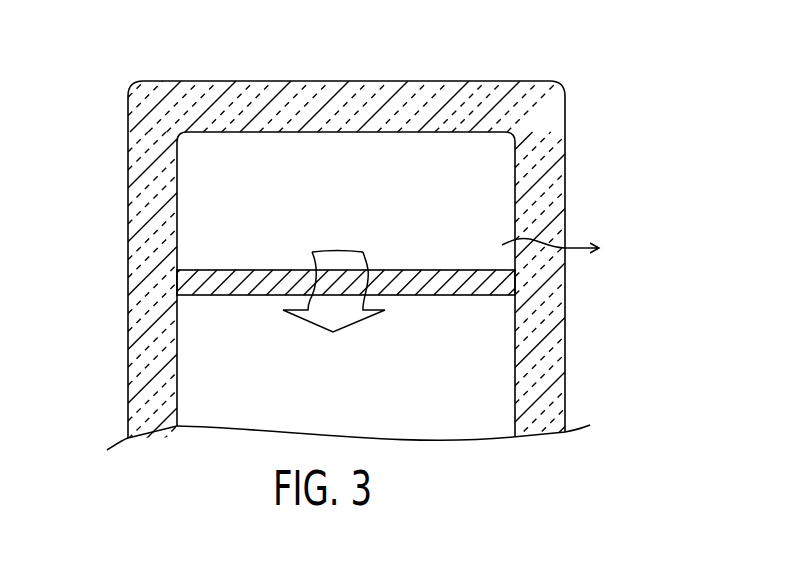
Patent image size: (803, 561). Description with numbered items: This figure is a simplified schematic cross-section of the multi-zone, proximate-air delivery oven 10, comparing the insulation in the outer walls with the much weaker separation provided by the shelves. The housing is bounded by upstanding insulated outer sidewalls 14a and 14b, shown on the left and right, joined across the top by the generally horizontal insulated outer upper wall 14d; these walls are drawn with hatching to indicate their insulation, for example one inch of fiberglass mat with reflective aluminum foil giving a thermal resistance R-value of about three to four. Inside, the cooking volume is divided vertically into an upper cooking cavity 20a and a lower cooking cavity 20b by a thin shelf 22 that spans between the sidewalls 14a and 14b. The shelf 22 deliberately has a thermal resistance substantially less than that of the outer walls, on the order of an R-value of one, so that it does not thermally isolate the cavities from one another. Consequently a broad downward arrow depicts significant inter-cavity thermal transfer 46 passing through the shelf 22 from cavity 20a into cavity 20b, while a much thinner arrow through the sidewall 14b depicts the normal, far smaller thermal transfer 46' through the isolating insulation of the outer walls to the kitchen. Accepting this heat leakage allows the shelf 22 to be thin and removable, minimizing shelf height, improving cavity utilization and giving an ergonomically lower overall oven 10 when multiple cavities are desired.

The multi-zone, proximate-air delivery oven 10 is at (580, 77).
The upstanding insulated outer sidewall 14a is at (137, 303).
The upstanding insulated outer sidewall 14b is at (550, 308).
The insulated outer upper wall 14d is at (406, 92).
The cooking cavity 20a is at (363, 205).
The cooking cavity 20b is at (360, 377).
The shelf 22 is at (456, 284).
The inter-cavity thermal transfer 46 is at (335, 271).
The thermal transfer through isolating insulation of the walls 46' is at (551, 220).